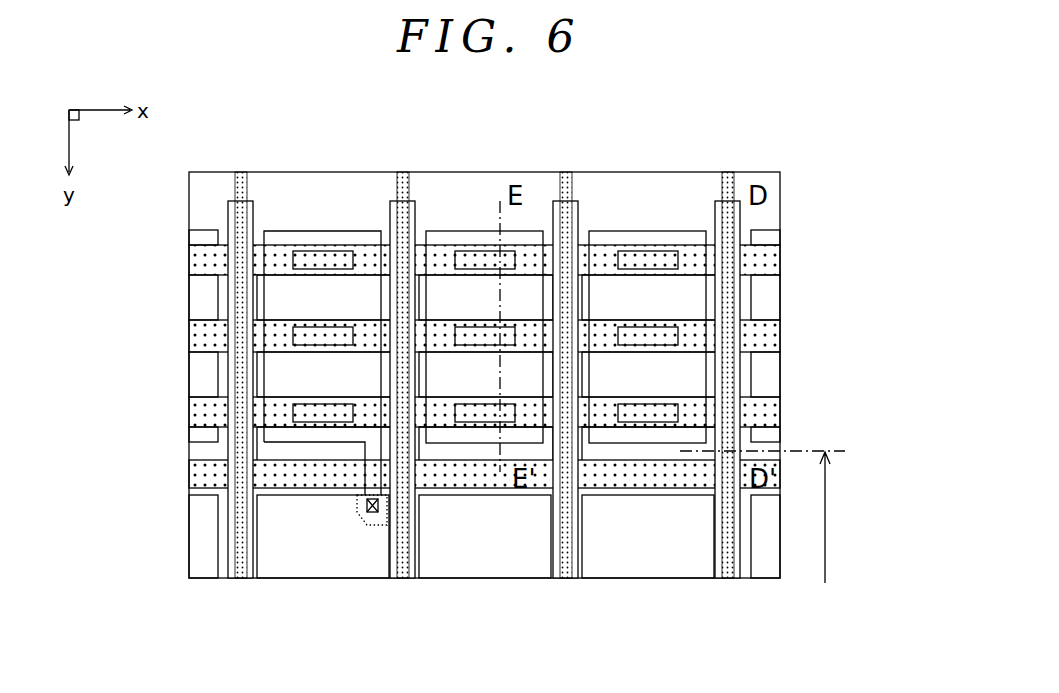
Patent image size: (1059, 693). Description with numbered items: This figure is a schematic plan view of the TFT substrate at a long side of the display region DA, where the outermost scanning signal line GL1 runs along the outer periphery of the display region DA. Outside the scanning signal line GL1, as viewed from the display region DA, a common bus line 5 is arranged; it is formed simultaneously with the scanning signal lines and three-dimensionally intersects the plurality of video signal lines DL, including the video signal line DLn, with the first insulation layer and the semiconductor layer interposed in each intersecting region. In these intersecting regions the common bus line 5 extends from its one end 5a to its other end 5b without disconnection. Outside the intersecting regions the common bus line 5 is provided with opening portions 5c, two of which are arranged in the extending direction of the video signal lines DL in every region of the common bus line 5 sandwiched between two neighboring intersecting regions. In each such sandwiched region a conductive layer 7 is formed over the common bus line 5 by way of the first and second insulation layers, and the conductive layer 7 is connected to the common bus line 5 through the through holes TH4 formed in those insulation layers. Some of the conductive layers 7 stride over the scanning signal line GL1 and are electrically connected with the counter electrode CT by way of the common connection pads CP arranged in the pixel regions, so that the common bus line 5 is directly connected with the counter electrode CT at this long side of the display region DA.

The common bus line 5 is at (790, 243).
The one end of common bus line 5a is at (204, 235).
The another end of common bus line 5b is at (209, 439).
The opening portion 5c is at (446, 290).
The conductive layer 7 is at (350, 223).
The through hole TH4 is at (476, 239).
The video signal line DL is at (242, 337).
The video signal line DLn is at (566, 192).
The scanning signal line GL1 is at (266, 473).
The common connection pad CP is at (375, 523).
The counter electrode CT is at (305, 550).
The display region DA is at (844, 505).